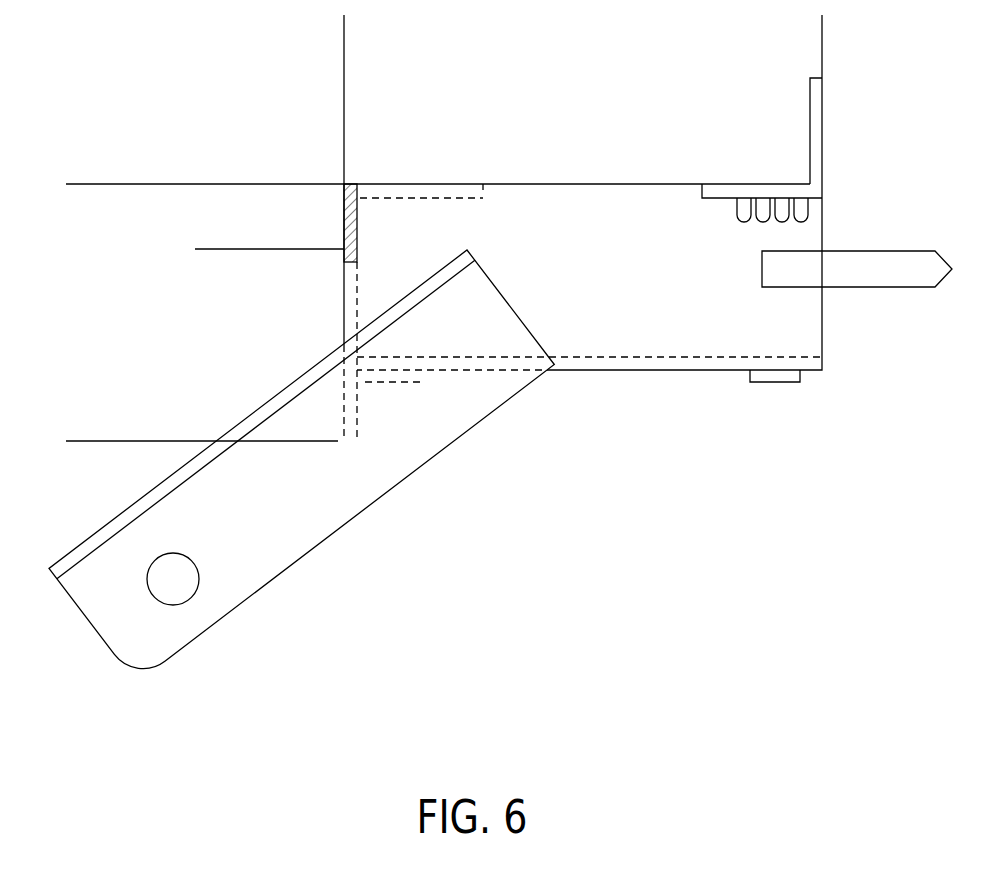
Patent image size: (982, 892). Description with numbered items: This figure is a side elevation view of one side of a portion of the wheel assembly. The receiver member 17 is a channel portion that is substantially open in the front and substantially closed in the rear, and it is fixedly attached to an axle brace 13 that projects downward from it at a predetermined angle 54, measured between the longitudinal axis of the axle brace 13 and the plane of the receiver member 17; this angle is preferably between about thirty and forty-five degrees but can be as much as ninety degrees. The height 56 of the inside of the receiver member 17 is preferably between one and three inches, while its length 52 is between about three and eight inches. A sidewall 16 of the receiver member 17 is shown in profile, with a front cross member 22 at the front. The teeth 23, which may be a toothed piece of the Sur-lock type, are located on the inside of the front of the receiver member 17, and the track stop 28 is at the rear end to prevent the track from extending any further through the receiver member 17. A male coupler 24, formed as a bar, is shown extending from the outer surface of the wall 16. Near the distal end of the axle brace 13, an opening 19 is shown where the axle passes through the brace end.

The axle brace 13 is at (312, 521).
The sidewall 16 is at (797, 332).
The receiver member 17 is at (595, 404).
The hole 19 is at (176, 577).
The front cross member 22 is at (818, 134).
The teeth 23 is at (795, 215).
The male coupler 24 is at (888, 274).
The track stop 28 is at (344, 212).
The length 52 is at (344, 40).
The predetermined angle 54 is at (205, 249).
The height 56 is at (82, 184).